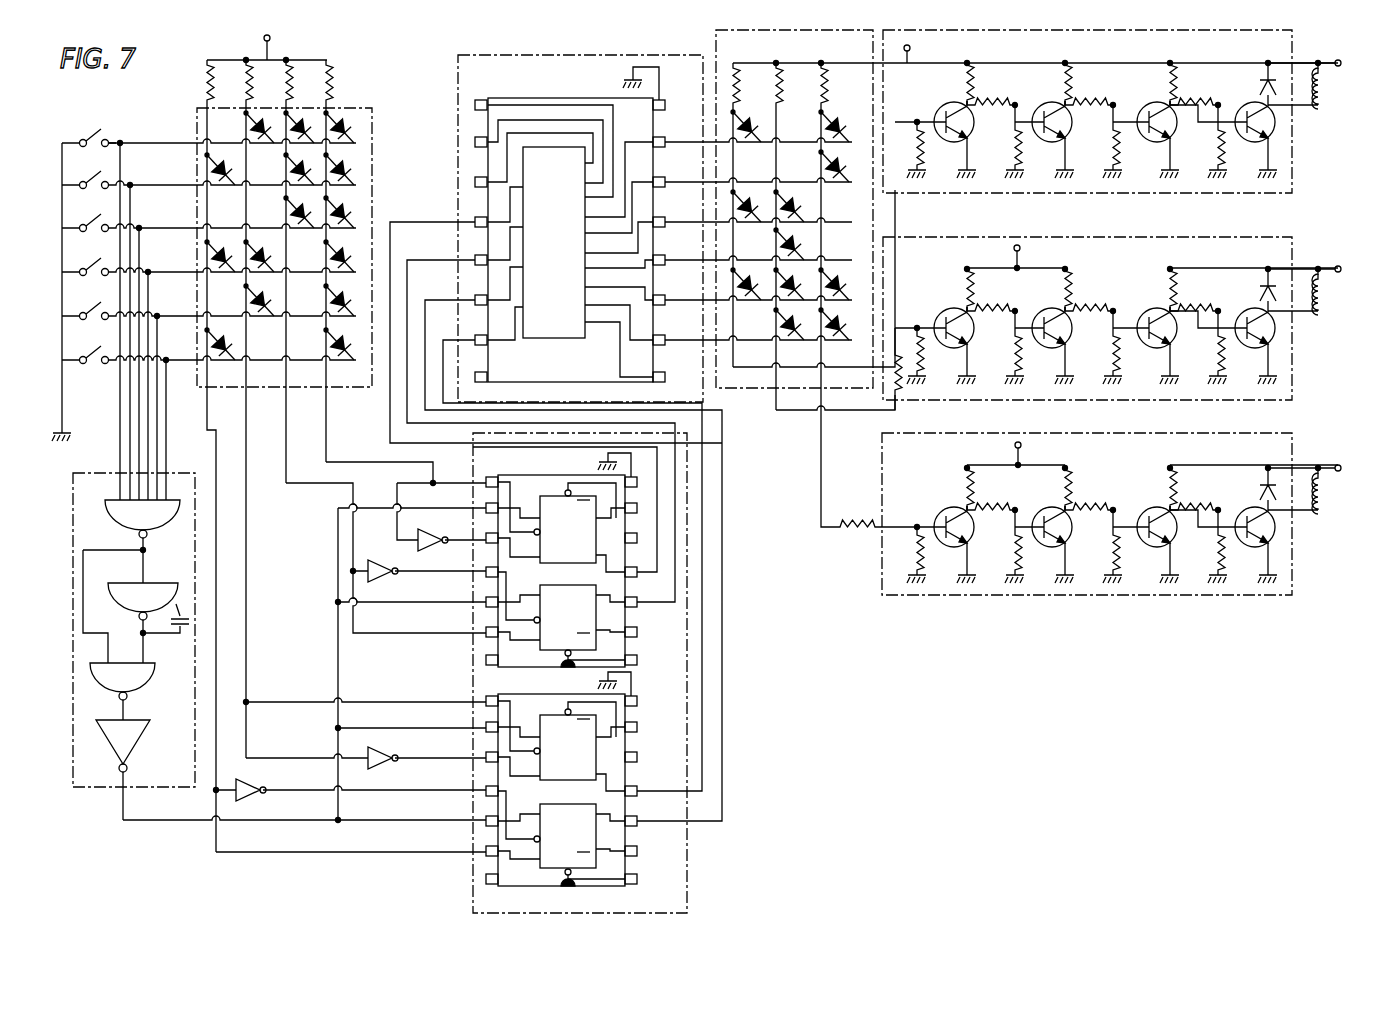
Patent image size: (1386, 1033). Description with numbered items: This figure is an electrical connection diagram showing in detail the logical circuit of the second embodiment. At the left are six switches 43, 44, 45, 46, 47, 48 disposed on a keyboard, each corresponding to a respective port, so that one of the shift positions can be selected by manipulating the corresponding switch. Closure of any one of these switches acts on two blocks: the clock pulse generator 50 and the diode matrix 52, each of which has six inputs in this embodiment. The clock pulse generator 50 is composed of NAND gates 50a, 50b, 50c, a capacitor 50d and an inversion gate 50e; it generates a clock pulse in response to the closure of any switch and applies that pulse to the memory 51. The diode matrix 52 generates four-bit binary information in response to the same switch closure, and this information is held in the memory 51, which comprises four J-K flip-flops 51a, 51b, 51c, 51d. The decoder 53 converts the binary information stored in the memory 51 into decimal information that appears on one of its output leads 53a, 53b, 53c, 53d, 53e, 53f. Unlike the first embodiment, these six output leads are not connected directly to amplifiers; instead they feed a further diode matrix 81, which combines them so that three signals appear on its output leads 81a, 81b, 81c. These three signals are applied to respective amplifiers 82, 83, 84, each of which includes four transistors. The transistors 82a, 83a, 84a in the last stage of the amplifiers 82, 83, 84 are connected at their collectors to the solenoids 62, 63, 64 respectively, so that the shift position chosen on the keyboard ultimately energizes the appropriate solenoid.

The switch 43 is at (100, 137).
The switch 44 is at (104, 180).
The switch 45 is at (104, 223).
The switch 46 is at (104, 267).
The switch 47 is at (104, 311).
The switch 48 is at (104, 355).
The clock pulse generator 50 is at (134, 631).
The NAND gate 50a is at (120, 509).
The NAND gate 50b is at (122, 600).
The NAND gate 50c is at (106, 674).
The capacitor 50d is at (184, 628).
The inversion gate 50e is at (135, 748).
The memory 51 is at (423, 673).
The J-K flip-flop 51a is at (546, 495).
The J-K flip-flop 51b is at (551, 590).
The J-K flip-flop 51c is at (548, 714).
The J-K flip-flop 51d is at (551, 808).
The diode matrix 52 is at (372, 130).
The decoder 53 is at (455, 75).
The output lead 53a is at (664, 340).
The output lead 53b is at (664, 300).
The output lead 53c is at (664, 260).
The output lead 53d is at (664, 222).
The output lead 53e is at (664, 182).
The output lead 53f is at (664, 142).
The diode matrix 81 is at (712, 50).
The output lead 81a is at (752, 369).
The output lead 81b is at (793, 412).
The output lead 81c is at (821, 470).
The amplifier 82 is at (1128, 111).
The transistor 82a is at (1274, 119).
The solenoid 62 is at (1328, 92).
The amplifier 83 is at (1126, 311).
The transistor 83a is at (1275, 325).
The solenoid 63 is at (1322, 293).
The amplifier 84 is at (1126, 503).
The transistor 84a is at (1268, 524).
The solenoid 64 is at (1318, 492).